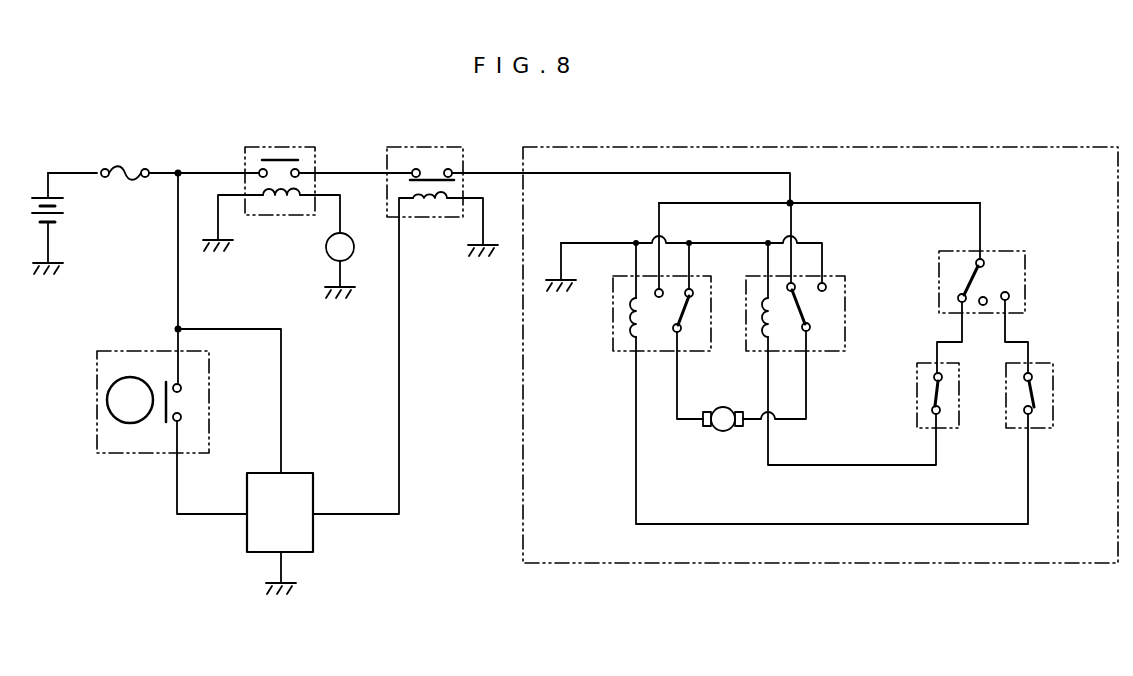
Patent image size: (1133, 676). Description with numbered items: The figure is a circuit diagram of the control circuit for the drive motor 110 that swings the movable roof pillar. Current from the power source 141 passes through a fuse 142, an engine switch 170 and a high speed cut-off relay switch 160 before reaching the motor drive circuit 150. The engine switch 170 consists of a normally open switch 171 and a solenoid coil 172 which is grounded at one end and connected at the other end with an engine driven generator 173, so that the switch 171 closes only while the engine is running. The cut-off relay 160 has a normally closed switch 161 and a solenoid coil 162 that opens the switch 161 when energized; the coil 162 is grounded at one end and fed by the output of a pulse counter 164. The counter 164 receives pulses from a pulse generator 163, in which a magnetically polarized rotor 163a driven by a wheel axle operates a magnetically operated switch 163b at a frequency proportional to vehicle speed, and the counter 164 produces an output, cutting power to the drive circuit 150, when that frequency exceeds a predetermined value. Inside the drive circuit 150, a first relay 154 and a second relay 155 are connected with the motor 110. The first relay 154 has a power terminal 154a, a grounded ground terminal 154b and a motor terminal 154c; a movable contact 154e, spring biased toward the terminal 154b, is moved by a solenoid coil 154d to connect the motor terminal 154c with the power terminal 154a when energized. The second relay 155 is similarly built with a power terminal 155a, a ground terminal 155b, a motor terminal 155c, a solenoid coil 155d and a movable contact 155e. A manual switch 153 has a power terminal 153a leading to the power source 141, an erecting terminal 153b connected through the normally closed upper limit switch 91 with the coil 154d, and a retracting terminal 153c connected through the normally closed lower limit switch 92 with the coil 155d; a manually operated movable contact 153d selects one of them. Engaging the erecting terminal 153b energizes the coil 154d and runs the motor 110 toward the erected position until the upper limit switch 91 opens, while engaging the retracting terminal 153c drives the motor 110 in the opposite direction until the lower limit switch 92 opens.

The power source 141 is at (64, 208).
The fuse 142 is at (130, 166).
The motor drive circuit 150 is at (926, 146).
The manual switch 153 is at (1014, 250).
The power terminal 153a is at (982, 229).
The erecting terminal 153b is at (958, 328).
The retracting terminal 153c is at (1005, 331).
The movable contact 153d is at (975, 281).
The first relay 154 is at (848, 291).
The power terminal 154a is at (796, 253).
The ground terminal 154b is at (828, 253).
The motor terminal 154c is at (808, 397).
The solenoid coil 154d is at (760, 335).
The movable contact 154e is at (808, 300).
The second relay 155 is at (612, 331).
The power terminal 155a is at (645, 238).
The ground terminal 155b is at (694, 251).
The motor terminal 155c is at (677, 381).
The solenoid coil 155d is at (626, 350).
The movable contact 155e is at (689, 303).
The motor 110 is at (726, 433).
The upper limit switch 91 is at (917, 411).
The lower limit switch 92 is at (1053, 411).
The high speed cut-off relay switch 160 is at (456, 146).
The normally closed switch 161 is at (436, 167).
The solenoid coil 162 is at (440, 206).
The pulse generator 163 is at (88, 436).
The magnetically polarized rotor 163a is at (116, 378).
The magnetically operated switch 163b is at (158, 425).
The pulse counter 164 is at (300, 473).
The engine switch 170 is at (306, 146).
The normally open switch 171 is at (270, 157).
The solenoid coil 172 is at (272, 204).
The engine driven generator 173 is at (327, 257).